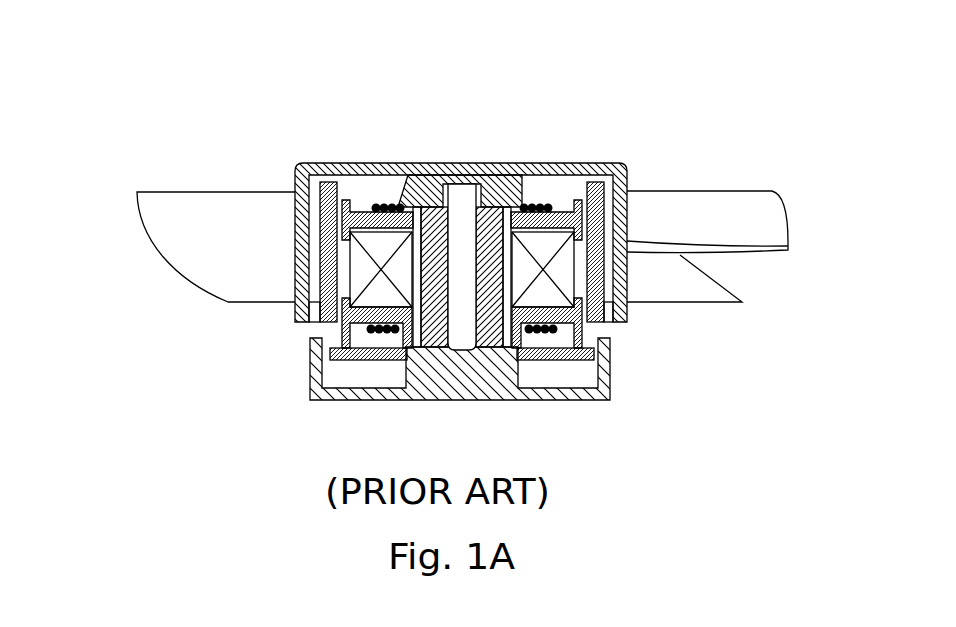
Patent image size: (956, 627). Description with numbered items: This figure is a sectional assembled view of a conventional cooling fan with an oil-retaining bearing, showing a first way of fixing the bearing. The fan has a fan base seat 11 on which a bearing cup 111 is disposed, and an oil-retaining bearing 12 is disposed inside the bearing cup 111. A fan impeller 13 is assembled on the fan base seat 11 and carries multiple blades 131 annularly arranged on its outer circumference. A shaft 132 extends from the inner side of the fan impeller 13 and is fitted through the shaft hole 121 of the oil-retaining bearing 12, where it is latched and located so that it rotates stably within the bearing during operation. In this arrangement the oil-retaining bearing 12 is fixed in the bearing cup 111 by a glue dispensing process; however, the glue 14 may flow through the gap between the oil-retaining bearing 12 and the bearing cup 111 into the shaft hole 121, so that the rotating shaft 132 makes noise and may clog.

The fan base seat 11 is at (550, 400).
The bearing cup 111 is at (523, 205).
The oil-retaining bearing 12 is at (477, 283).
The shaft hole 121 is at (477, 283).
The fan impeller 13 is at (316, 163).
The blades 131 is at (198, 245).
The shaft 132 is at (453, 227).
The glue 14 is at (413, 198).